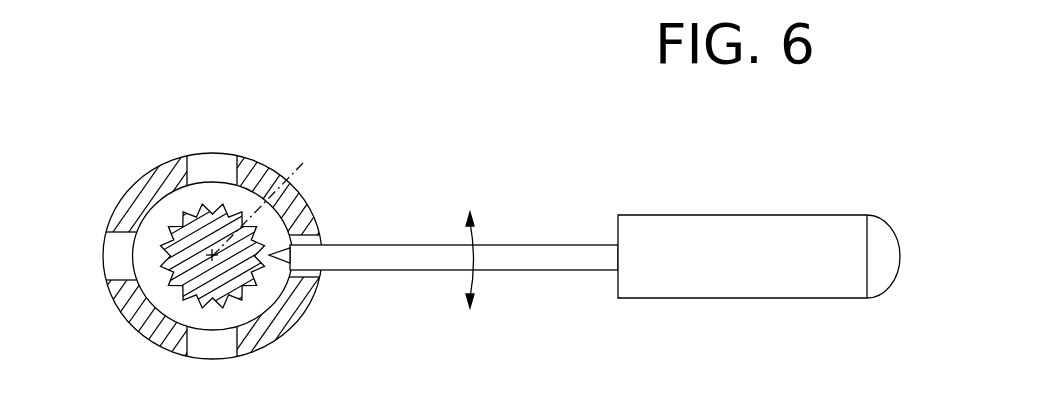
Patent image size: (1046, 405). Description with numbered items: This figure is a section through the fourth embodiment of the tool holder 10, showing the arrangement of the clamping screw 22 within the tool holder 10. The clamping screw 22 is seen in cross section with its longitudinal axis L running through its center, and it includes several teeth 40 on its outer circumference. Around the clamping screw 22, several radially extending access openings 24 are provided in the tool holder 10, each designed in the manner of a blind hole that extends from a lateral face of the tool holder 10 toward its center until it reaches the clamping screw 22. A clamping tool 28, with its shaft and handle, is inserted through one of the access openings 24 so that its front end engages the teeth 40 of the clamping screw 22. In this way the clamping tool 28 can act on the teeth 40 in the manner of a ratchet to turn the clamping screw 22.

The tool holder 10 is at (125, 323).
The clamping screw 22 is at (166, 236).
The access opening 24 is at (222, 170).
The clamping tool 28 is at (529, 257).
The teeth 40 is at (253, 297).
The longitudinal axis L is at (268, 205).